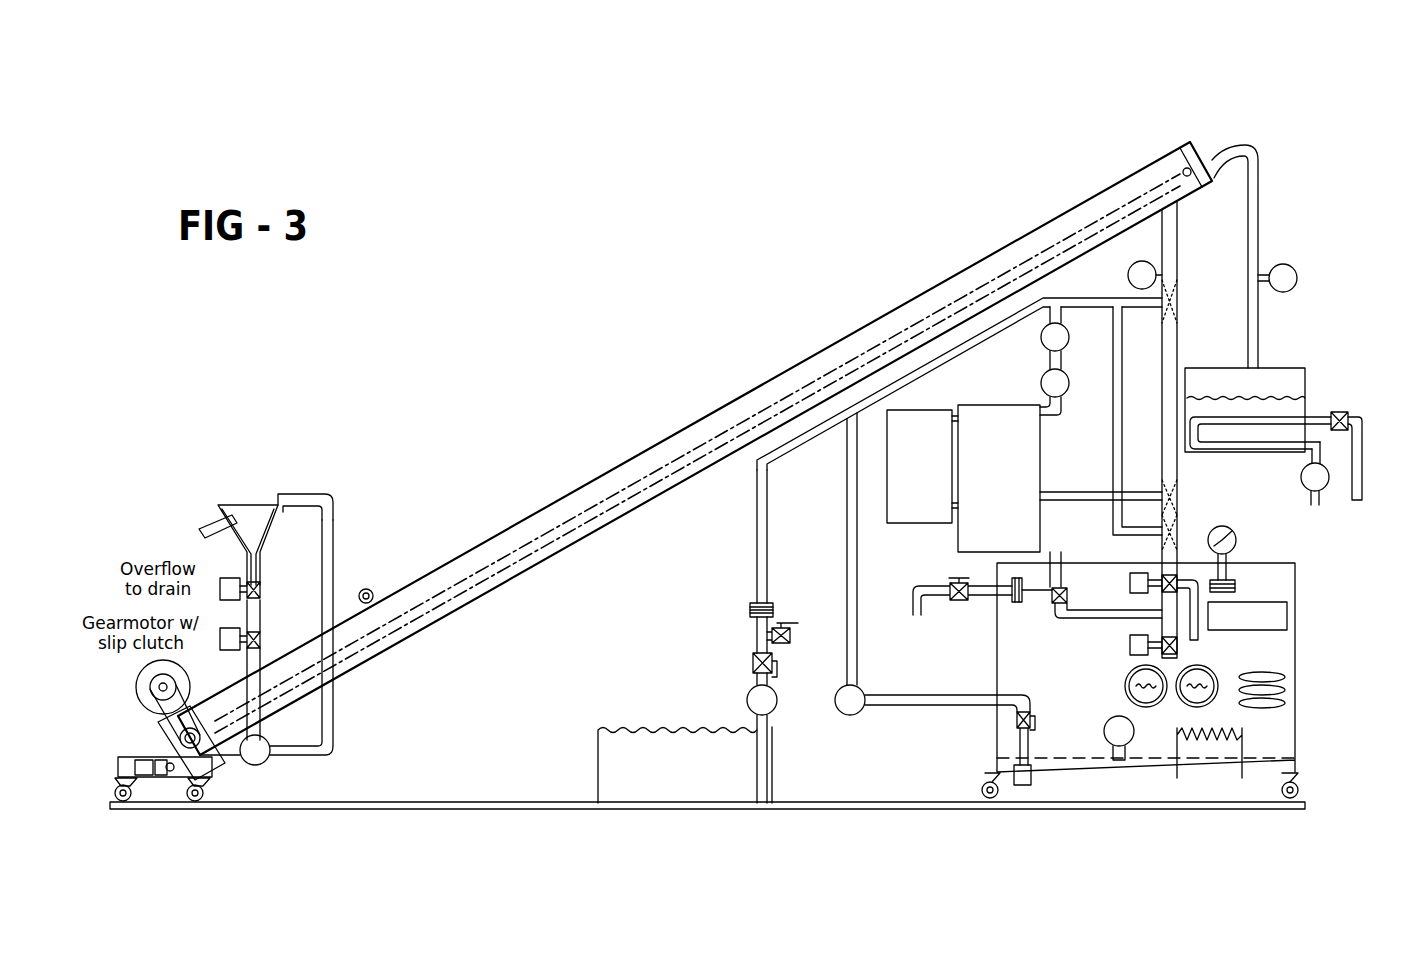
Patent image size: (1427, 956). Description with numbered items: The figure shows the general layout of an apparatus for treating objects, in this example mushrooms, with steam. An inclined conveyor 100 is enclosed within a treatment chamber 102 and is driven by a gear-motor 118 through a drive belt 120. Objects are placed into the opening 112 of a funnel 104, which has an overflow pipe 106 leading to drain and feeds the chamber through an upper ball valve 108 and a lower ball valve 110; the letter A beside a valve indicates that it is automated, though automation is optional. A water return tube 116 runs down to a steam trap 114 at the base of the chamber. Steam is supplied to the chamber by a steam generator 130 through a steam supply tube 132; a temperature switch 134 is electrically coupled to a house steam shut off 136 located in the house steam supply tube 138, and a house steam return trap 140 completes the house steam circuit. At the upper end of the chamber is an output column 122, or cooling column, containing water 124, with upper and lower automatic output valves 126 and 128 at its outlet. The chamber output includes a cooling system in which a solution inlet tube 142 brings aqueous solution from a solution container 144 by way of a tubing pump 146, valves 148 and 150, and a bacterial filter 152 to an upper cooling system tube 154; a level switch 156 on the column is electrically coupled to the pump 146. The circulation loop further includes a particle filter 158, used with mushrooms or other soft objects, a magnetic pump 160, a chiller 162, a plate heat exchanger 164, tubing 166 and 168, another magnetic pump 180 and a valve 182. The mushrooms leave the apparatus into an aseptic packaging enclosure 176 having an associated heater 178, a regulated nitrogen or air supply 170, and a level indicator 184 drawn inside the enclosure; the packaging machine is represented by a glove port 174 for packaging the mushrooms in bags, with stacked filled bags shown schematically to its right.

The conveyor 100 is at (400, 602).
The treatment chamber 102 is at (425, 630).
The funnel 104 is at (224, 503).
The overflow pipe 106 is at (214, 518).
The upper ball valve 108 is at (260, 590).
The lower ball valve 110 is at (260, 637).
The opening 112 is at (266, 500).
The steam trap 114 is at (262, 768).
The water return tube 116 is at (333, 715).
The gear-motor 118 is at (136, 672).
The drive belt 120 is at (157, 716).
The output column 122 is at (1172, 247).
The water 124 is at (1225, 283).
The upper automatic output valve 126 is at (1182, 560).
The lower automatic output valve 128 is at (1180, 650).
The steam generator 130 is at (1296, 372).
The steam supply tube 132 is at (1262, 230).
The temperature switch 134 is at (1298, 278).
The house steam shut off 136 is at (1345, 411).
The house steam supply tube 138 is at (1366, 468).
The house steam return trap 140 is at (1302, 485).
The solution inlet tube 142 is at (775, 780).
The solution container 144 is at (600, 737).
The tubing pump 146 is at (777, 704).
The valve 148 is at (752, 663).
The valve 150 is at (778, 624).
The bacterial filter 152 is at (750, 610).
The upper cooling system tube 154 is at (1145, 303).
The level switch 156 is at (1128, 276).
The particle filter 158 is at (1040, 338).
The magnetic pump 160 is at (1069, 378).
The chiller 162 is at (908, 523).
The plate heat exchanger 164 is at (1042, 447).
The tubing 166 is at (1135, 490).
The tubing 168 is at (1102, 505).
The nitrogen or air supply 170 is at (917, 610).
The glove port 174 is at (1124, 684).
The aseptic packaging enclosure 176 is at (1298, 748).
The heater 178 is at (1183, 770).
The magnetic pump 180 is at (858, 716).
The valve 182 is at (1033, 740).
The level sensor 184 is at (1128, 748).